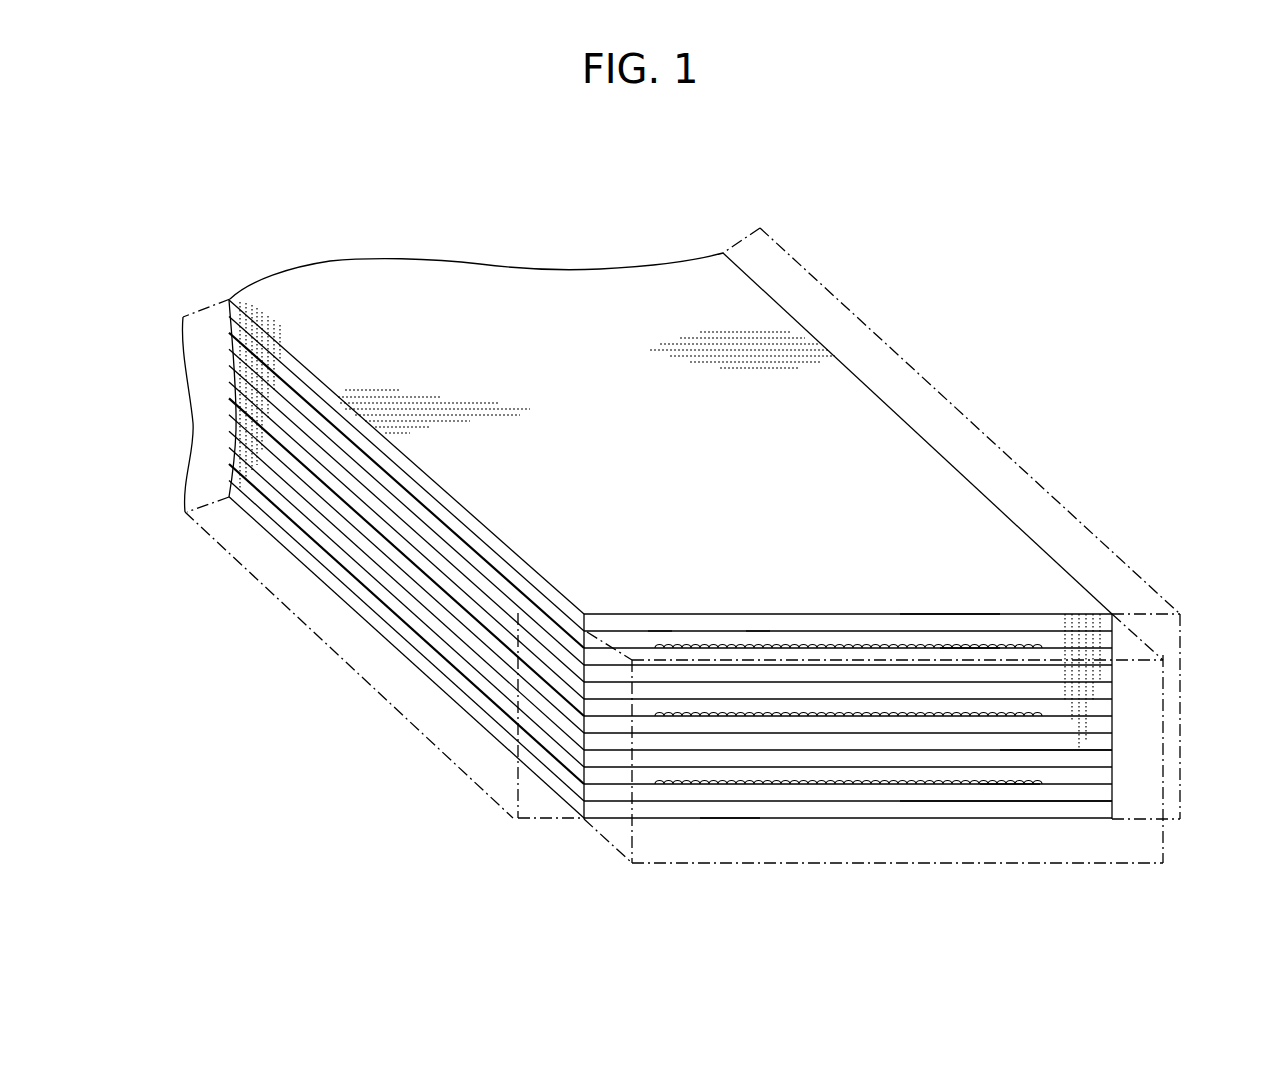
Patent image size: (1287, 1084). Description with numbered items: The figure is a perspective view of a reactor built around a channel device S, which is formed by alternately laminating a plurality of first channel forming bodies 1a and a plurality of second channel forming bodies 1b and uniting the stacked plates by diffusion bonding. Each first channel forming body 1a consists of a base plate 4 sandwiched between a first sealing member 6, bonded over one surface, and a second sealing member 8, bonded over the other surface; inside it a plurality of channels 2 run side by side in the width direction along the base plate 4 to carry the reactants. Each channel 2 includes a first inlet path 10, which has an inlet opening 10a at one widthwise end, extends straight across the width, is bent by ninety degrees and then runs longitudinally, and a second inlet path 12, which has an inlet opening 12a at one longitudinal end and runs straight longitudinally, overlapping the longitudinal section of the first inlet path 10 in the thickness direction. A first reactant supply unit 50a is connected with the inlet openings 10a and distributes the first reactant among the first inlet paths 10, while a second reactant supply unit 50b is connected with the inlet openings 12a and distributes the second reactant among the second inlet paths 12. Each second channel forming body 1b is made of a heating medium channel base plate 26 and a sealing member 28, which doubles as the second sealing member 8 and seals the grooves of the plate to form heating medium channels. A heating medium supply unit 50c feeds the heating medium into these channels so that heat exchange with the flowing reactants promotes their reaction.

The first channel forming body 1a is at (1140, 626).
The second channel forming body 1b is at (1140, 660).
The channel 2 is at (660, 629).
The base plate 4 is at (962, 643).
The first sealing member 6 is at (917, 613).
The second sealing member 8 is at (670, 614).
The sealing member 28 is at (583, 732).
The first inlet path 10 is at (586, 402).
The inlet opening 10a is at (337, 390).
The second inlet path 12 is at (848, 634).
The inlet opening 12a is at (898, 643).
The heating medium channel base plate 26 is at (790, 675).
The channel device S is at (890, 405).
The first reactant supply unit 50a is at (270, 590).
The second reactant supply unit 50b is at (832, 863).
The heating medium supply unit 50c is at (1020, 468).